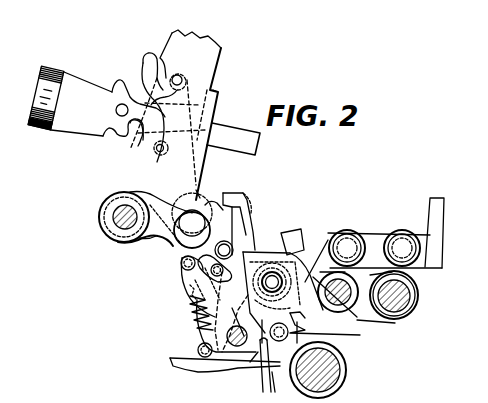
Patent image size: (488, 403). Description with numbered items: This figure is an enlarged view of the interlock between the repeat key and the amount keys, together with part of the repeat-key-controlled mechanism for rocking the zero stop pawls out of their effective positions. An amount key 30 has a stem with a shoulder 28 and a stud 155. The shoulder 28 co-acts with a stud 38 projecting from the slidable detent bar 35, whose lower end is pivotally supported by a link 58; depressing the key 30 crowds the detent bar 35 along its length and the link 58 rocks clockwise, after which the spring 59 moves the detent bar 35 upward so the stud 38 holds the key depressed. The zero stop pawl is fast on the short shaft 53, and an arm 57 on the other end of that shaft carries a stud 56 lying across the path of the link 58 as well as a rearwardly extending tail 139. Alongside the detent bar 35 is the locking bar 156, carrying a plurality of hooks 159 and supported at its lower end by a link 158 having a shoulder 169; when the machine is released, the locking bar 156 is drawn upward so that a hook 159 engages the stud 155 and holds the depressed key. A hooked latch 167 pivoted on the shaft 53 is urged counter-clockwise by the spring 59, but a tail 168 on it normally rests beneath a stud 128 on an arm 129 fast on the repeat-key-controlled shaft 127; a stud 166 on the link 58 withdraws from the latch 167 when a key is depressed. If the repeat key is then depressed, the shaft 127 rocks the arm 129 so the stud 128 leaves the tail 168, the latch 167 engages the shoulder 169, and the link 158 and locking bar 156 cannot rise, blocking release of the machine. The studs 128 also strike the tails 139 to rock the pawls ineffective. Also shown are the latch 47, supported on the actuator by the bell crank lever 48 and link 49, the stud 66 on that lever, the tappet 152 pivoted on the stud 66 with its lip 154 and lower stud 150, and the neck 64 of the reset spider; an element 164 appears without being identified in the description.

The amount key 30 is at (59, 67).
The stud 155 is at (113, 92).
The hook 159 is at (152, 59).
The stud 38 is at (175, 77).
The detent bar 35 is at (213, 55).
The locking bar 156 is at (217, 100).
The shoulder 169 is at (198, 197).
The hooked latch 167 is at (247, 197).
The link 58 is at (246, 203).
The lip 154 is at (301, 248).
The stud 66 is at (272, 280).
The tappet 152 is at (302, 277).
The latch 47 is at (377, 232).
The bell crank lever 48 is at (347, 230).
The link 49 is at (411, 230).
The neck 64 is at (400, 322).
The shoulder 28 is at (135, 220).
The link 158 is at (153, 232).
The stud 166 is at (182, 262).
The stud 56 is at (182, 279).
The spring 59 is at (190, 307).
The arm 57 is at (222, 330).
The shaft 53 is at (227, 337).
The tail 139 is at (247, 362).
The tail 168 is at (255, 364).
The pendant link 164 is at (268, 357).
The stud 128 is at (274, 365).
The stud 150 is at (295, 297).
The arm 129 is at (343, 337).
The shaft 127 is at (327, 362).